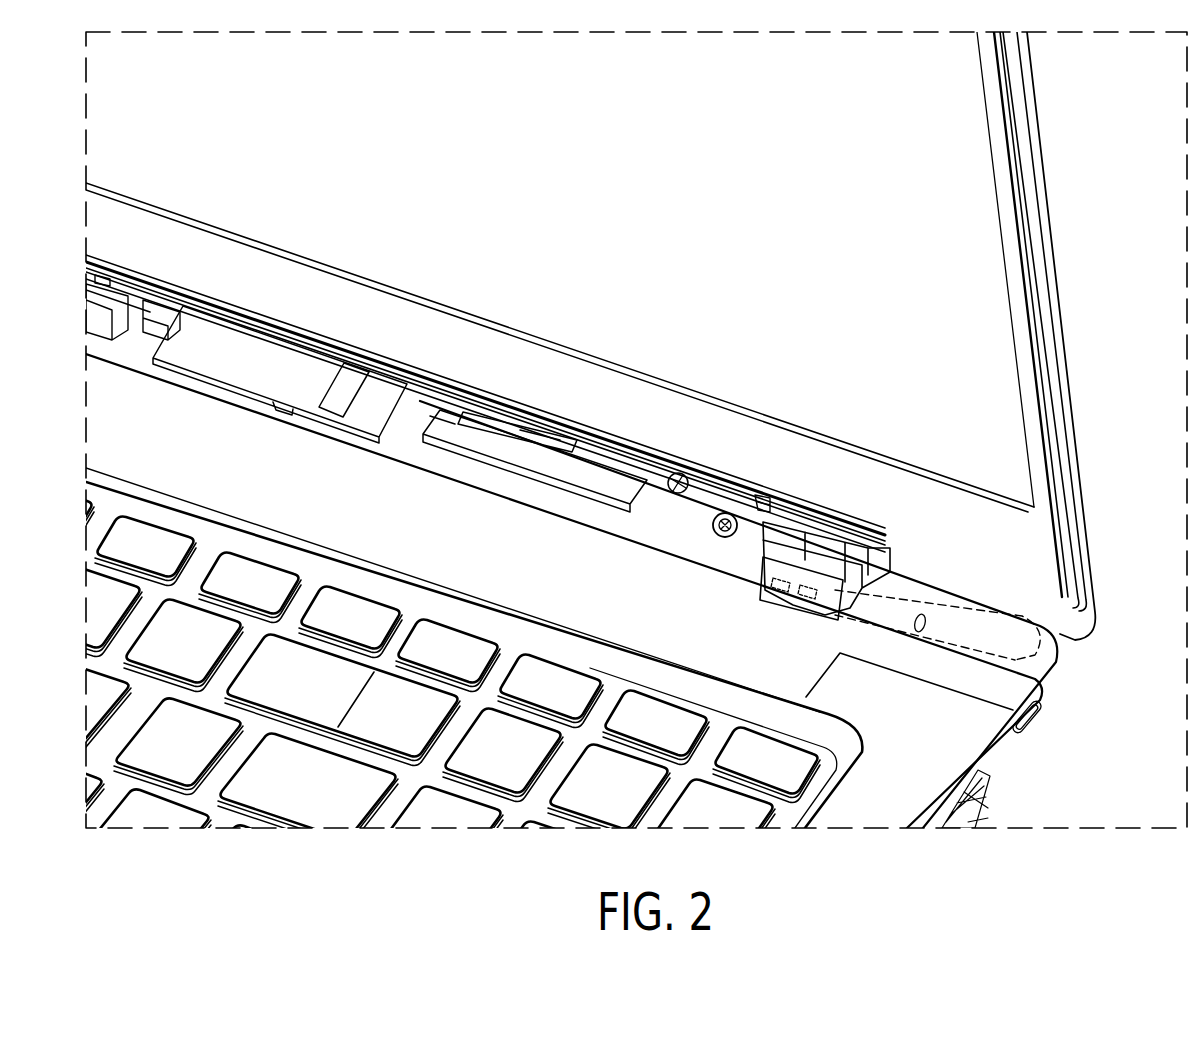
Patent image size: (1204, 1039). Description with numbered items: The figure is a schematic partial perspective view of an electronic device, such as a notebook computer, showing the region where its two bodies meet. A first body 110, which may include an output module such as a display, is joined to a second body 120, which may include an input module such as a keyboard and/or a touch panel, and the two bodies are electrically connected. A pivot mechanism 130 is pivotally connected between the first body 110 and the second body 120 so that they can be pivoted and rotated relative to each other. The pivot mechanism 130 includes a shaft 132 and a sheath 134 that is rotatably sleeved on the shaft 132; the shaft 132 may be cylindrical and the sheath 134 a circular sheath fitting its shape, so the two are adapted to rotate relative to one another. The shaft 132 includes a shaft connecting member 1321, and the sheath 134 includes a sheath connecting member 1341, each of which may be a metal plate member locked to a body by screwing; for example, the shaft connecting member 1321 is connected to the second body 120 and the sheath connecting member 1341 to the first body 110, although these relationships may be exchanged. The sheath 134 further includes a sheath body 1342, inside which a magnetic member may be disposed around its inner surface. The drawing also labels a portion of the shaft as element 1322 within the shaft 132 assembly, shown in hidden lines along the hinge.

The first body 110 is at (1031, 402).
The second body 120 is at (948, 743).
The pivot mechanism 130 is at (628, 505).
The shaft 132 is at (1002, 663).
The sheath 134 is at (749, 601).
The shaft connecting member 1321 is at (870, 550).
The hinge shaft 1322 is at (976, 663).
The sheath connecting member 1341 is at (760, 497).
The sheath body 1342 is at (768, 588).